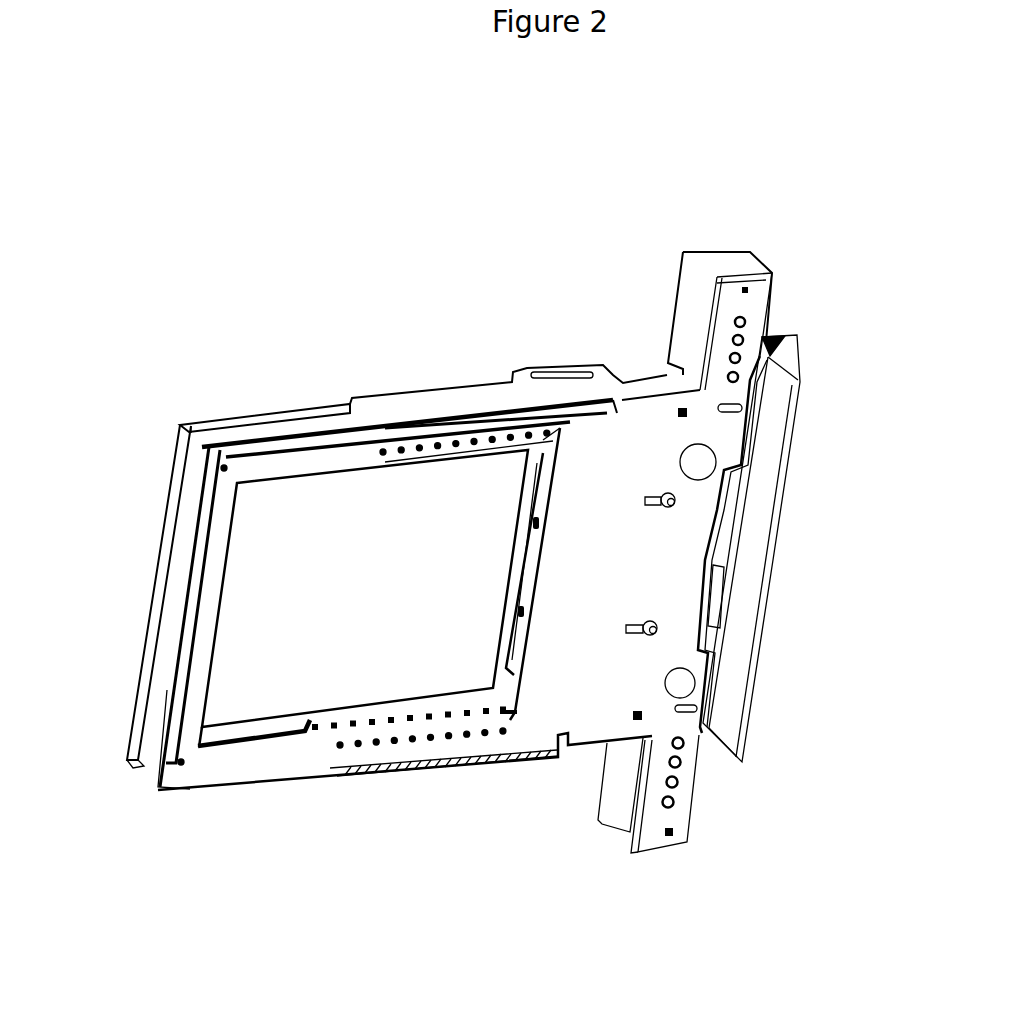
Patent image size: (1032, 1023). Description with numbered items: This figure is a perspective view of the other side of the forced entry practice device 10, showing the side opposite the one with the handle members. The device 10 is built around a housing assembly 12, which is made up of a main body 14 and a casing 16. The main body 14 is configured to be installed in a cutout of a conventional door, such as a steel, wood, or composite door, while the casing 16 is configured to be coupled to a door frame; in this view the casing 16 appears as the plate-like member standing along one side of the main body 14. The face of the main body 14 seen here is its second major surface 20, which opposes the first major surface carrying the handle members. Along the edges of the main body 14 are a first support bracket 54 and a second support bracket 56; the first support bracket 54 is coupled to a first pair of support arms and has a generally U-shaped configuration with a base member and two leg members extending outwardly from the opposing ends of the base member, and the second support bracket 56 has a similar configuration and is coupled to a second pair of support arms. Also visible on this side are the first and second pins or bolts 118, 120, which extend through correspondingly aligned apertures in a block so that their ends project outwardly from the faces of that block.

The forced entry practice device 10 is at (430, 228).
The housing assembly 12 is at (583, 790).
The main body 14 is at (571, 728).
The casing 16 is at (762, 546).
The second major surface 20 is at (570, 560).
The first support bracket 54 is at (165, 530).
The second support bracket 56 is at (195, 766).
The first pin or bolt 118 is at (662, 494).
The second pin or bolt 120 is at (642, 636).